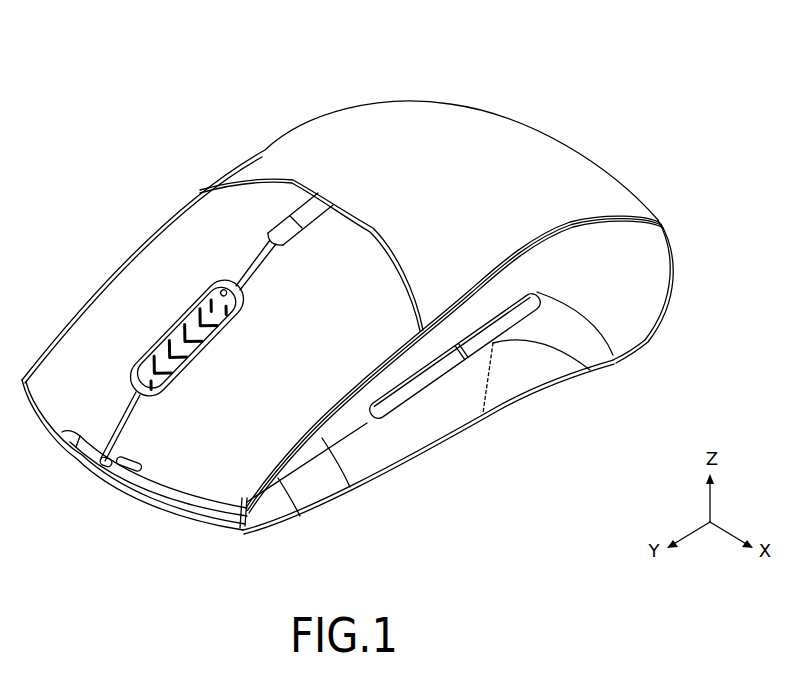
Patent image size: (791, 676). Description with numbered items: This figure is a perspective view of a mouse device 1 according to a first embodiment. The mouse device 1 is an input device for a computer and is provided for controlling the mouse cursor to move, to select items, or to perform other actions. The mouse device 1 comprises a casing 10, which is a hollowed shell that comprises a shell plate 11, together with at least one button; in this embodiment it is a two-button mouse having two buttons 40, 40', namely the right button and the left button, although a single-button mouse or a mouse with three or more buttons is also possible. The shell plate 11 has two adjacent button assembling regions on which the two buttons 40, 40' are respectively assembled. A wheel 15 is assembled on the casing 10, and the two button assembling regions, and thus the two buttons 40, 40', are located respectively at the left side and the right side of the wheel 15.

The mouse device 1 is at (159, 100).
The casing 10 is at (520, 380).
The shell plate 11 is at (258, 168).
The wheel 15 is at (173, 311).
The button 40 is at (134, 406).
The button 40' is at (311, 353).